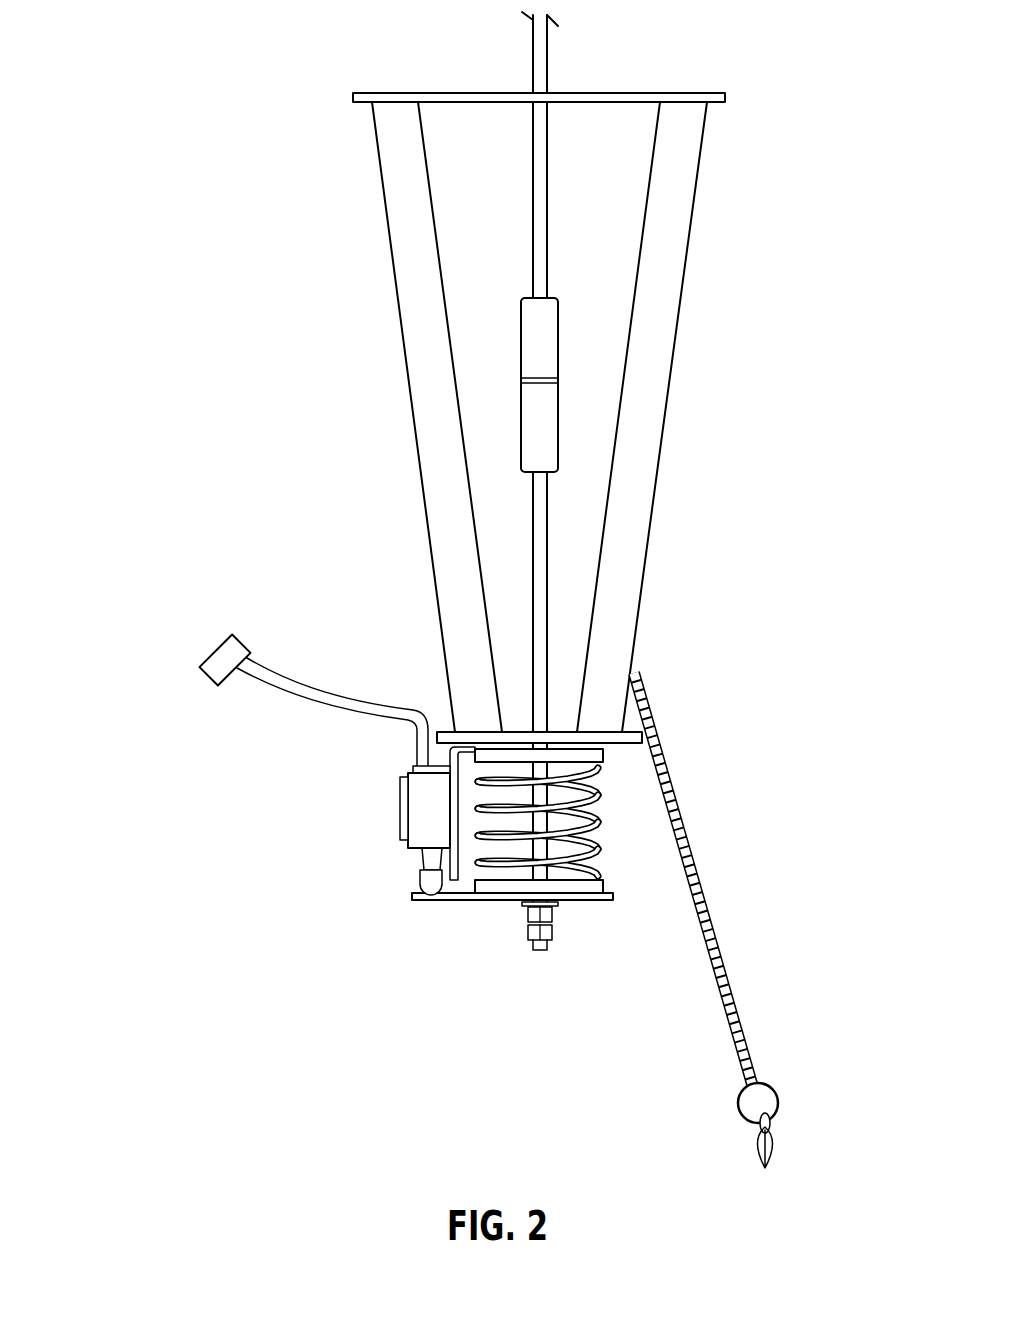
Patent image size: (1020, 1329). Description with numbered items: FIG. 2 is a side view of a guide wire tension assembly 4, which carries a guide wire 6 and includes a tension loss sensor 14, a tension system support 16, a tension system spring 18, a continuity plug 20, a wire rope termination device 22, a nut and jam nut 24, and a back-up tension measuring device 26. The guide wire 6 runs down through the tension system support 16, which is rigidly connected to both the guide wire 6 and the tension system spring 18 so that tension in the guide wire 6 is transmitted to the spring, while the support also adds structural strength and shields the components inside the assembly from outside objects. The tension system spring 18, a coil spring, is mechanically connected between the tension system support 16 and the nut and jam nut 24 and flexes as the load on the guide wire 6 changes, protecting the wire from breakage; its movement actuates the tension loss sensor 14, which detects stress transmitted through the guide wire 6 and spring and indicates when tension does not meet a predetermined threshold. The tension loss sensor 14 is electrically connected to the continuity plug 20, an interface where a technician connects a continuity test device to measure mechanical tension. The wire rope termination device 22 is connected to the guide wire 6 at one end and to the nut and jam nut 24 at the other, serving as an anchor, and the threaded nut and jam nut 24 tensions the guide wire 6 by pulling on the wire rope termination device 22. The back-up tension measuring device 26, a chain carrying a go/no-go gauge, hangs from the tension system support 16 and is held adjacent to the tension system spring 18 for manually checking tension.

The guide wire tension assembly 4 is at (464, 590).
The guide wire 6 is at (560, 137).
The tension loss sensor 14 is at (392, 806).
The tension system support 16 is at (668, 451).
The tension system spring 18 is at (606, 843).
The continuity plug 20 is at (207, 647).
The wire rope termination device 22 is at (483, 438).
The nut and jam nut 24 is at (497, 953).
The back-up tension measuring device 26 is at (698, 1040).